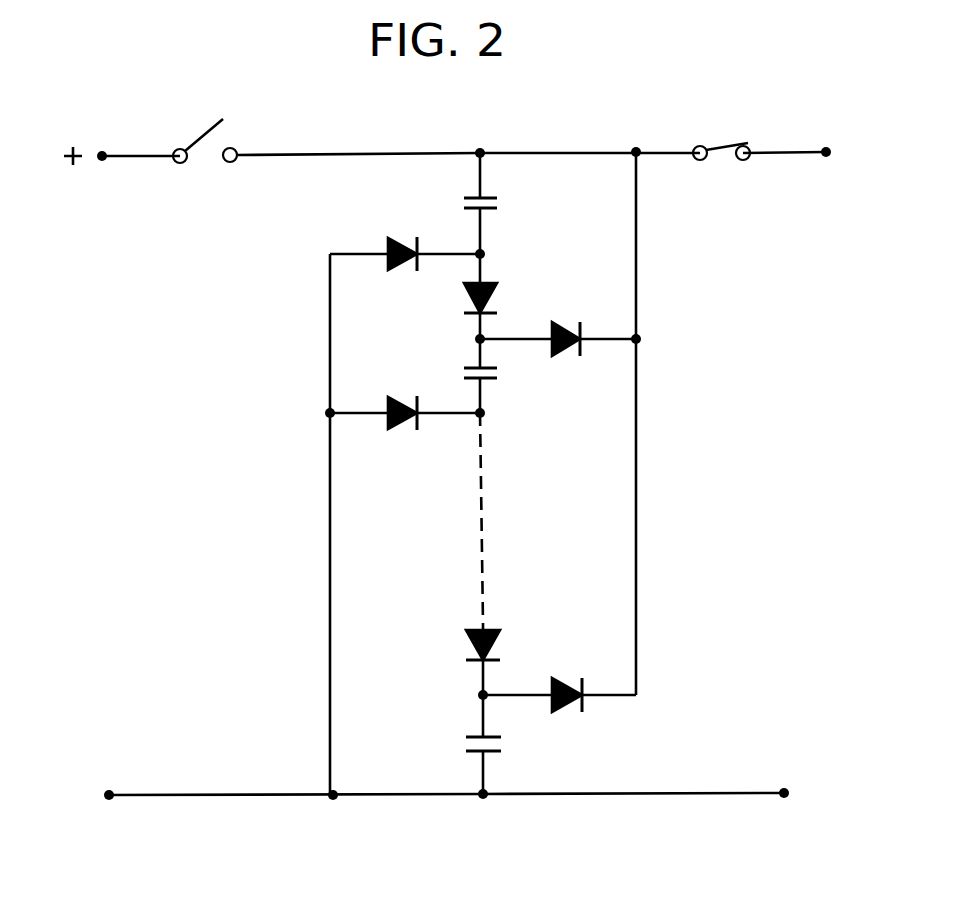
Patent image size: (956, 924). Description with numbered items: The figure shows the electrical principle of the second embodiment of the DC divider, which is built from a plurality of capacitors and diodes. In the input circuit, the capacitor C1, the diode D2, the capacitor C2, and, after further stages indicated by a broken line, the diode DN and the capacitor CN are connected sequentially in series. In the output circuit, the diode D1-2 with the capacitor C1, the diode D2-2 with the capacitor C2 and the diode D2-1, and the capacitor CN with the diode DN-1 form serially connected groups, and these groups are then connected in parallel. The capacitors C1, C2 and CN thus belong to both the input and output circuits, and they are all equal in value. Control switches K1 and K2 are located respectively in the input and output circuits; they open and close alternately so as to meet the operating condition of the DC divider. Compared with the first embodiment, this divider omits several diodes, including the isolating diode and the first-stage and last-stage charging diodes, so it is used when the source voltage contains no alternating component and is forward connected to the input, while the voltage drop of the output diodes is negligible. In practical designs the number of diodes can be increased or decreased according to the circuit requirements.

The control switch K1 is at (205, 121).
The control switch K2 is at (721, 124).
The capacitor C1 is at (500, 203).
The diode D1-2 is at (405, 232).
The diode D2 is at (502, 296).
The diode D2-1 is at (558, 361).
The diode D2-2 is at (405, 390).
The capacitor C2 is at (497, 379).
The diode DN is at (506, 554).
The diode DN-1 is at (570, 714).
The capacitor CN is at (459, 744).